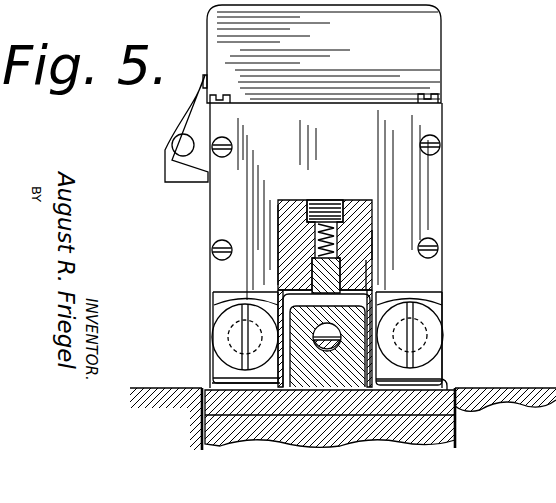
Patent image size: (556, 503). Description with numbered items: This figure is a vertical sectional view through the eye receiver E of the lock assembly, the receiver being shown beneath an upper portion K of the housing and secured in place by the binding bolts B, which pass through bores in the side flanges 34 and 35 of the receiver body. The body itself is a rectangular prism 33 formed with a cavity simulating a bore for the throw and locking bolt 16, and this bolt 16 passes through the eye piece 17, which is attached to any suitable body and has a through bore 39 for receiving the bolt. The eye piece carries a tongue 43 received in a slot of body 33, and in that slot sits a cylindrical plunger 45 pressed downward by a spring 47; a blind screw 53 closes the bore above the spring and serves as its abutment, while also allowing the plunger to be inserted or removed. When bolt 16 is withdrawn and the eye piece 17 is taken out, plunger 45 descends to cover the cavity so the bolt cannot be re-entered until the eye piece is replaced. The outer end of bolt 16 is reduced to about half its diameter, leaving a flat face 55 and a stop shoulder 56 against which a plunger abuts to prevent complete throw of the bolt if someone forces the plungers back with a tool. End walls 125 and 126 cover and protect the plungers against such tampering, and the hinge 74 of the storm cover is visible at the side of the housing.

The cover housing K is at (455, 52).
The eye receiver E is at (449, 169).
The hinge 74 is at (183, 146).
The spring 47 is at (353, 200).
The blind screw 53 is at (315, 200).
The rectangular prism 33 is at (280, 224).
The plunger 45 is at (369, 246).
The through bore 39 is at (369, 262).
The flat face 55 is at (381, 296).
The side flange 35 is at (432, 300).
The stop shoulder 56 is at (282, 303).
The side flange 34 is at (230, 297).
The end wall 125 is at (272, 312).
The binding bolt B is at (222, 332).
The end wall 126 is at (378, 368).
The tongue 43 is at (401, 379).
The throw and locking bolt 16 is at (214, 380).
The eye piece 17 is at (470, 426).